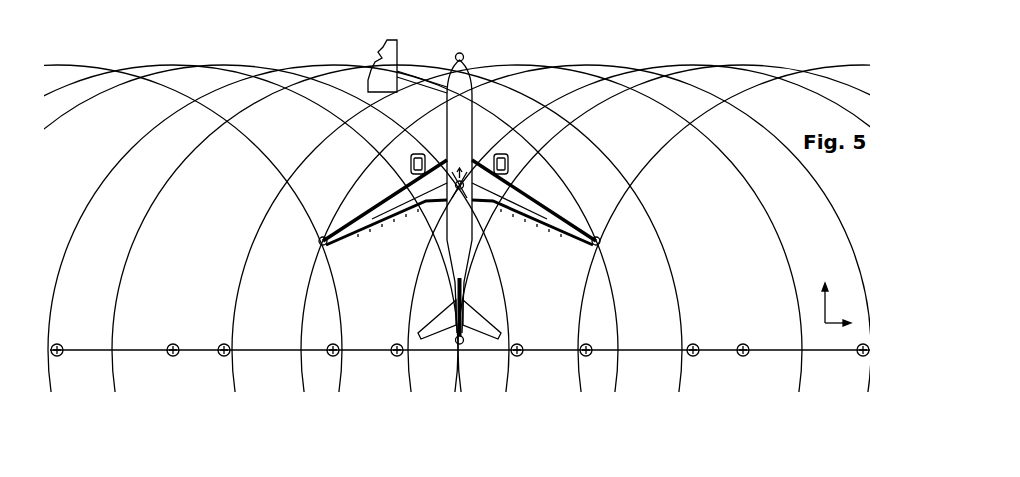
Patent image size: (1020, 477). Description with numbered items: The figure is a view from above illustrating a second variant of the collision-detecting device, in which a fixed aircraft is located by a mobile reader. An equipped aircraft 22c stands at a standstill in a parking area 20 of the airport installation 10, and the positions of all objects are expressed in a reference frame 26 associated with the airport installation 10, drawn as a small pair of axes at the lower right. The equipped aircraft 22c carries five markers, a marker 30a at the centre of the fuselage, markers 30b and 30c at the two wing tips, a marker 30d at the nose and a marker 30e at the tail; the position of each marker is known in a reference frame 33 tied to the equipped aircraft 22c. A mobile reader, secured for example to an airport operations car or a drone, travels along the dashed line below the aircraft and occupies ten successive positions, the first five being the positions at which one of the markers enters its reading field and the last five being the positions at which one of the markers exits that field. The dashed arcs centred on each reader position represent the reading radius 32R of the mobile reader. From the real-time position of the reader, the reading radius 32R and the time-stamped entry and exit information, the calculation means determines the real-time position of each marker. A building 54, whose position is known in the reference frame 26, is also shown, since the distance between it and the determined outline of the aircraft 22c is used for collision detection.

The parking area 20 is at (510, 255).
The reading radius 32R is at (102, 180).
The building 54 is at (377, 52).
The marker 30d is at (461, 53).
The marker 30a is at (456, 178).
The marker 30b is at (328, 246).
The marker 30c is at (591, 246).
The marker 30e is at (462, 345).
The equipped aircraft 22c is at (540, 186).
The reference frame tied to the equipped aircraft 33 is at (455, 195).
The reference frame 26 is at (821, 376).
The airport installation 10 is at (827, 325).